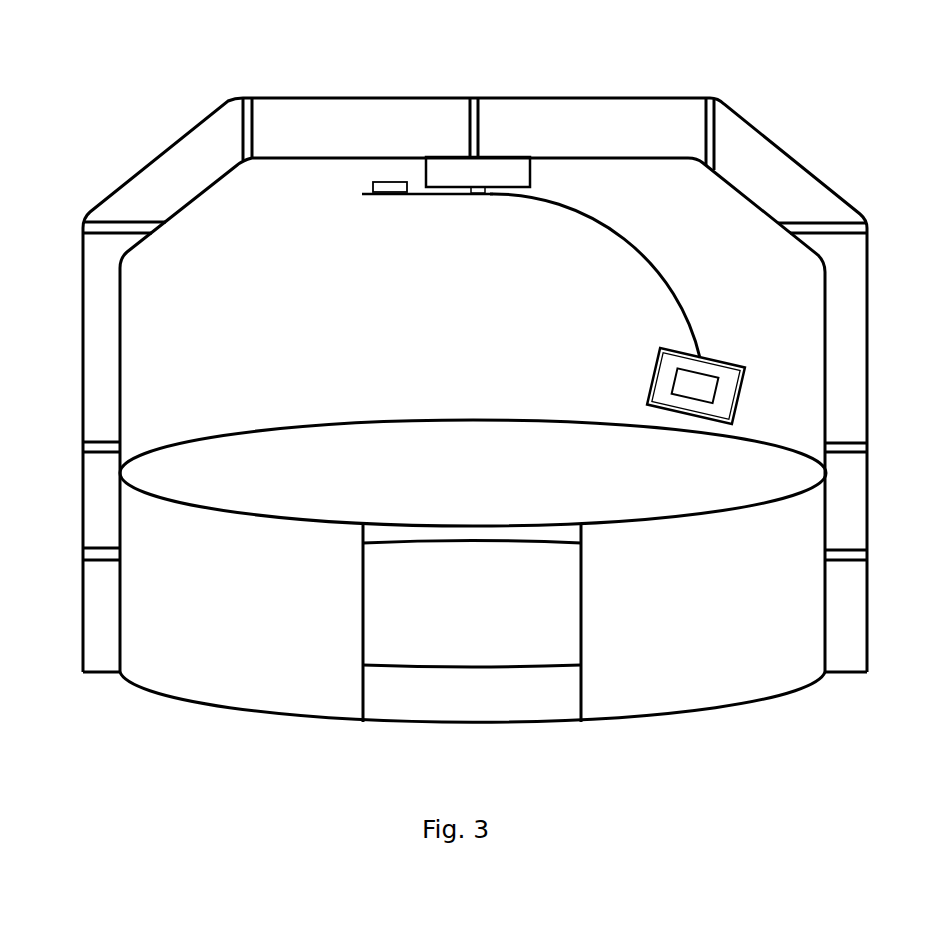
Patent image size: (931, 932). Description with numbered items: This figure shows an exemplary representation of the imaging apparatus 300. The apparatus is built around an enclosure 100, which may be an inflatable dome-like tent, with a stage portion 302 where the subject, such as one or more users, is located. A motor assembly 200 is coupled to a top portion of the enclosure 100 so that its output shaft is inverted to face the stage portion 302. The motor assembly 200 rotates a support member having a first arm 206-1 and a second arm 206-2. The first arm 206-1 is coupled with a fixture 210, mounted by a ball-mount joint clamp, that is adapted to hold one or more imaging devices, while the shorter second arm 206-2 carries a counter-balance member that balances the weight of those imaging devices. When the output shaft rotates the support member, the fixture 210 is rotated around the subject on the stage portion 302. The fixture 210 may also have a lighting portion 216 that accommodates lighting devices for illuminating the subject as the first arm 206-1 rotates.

The imaging apparatus 300 is at (157, 48).
The enclosure 100 is at (159, 136).
The motor assembly 200 is at (417, 157).
The first arm 206-1 is at (419, 206).
The second arm 206-2 is at (612, 253).
The fixture 210 is at (644, 375).
The lighting portion 216 is at (715, 362).
The stage portion 302 is at (425, 635).